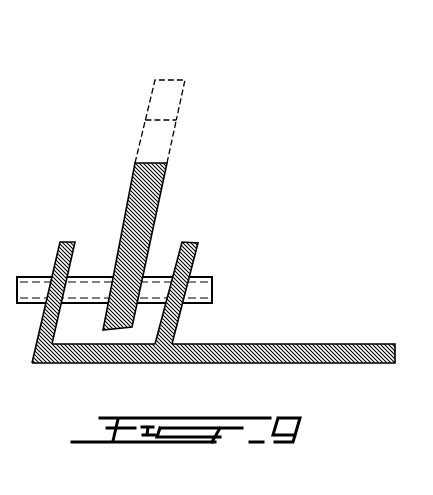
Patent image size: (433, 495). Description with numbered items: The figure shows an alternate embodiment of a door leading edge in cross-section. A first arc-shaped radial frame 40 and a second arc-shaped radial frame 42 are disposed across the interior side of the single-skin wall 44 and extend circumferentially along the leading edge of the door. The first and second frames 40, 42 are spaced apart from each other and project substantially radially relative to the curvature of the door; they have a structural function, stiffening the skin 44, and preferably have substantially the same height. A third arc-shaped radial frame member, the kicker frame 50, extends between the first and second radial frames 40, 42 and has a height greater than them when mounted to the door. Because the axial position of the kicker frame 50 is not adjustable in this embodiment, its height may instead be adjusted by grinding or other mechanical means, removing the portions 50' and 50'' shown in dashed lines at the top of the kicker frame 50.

The first arc-shaped radial frame 40 is at (70, 242).
The second arc-shaped radial frame 42 is at (190, 242).
The single-skin wall 44 is at (275, 344).
The kicker frame 50 is at (108, 220).
The portion 50' is at (208, 84).
The portion 50'' is at (197, 141).